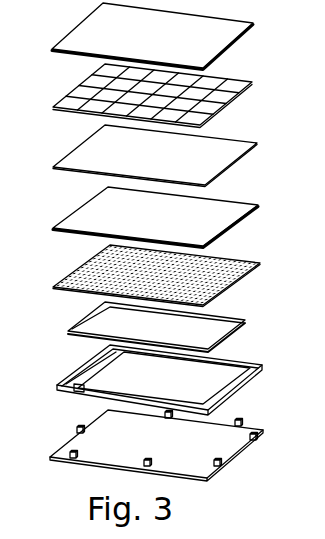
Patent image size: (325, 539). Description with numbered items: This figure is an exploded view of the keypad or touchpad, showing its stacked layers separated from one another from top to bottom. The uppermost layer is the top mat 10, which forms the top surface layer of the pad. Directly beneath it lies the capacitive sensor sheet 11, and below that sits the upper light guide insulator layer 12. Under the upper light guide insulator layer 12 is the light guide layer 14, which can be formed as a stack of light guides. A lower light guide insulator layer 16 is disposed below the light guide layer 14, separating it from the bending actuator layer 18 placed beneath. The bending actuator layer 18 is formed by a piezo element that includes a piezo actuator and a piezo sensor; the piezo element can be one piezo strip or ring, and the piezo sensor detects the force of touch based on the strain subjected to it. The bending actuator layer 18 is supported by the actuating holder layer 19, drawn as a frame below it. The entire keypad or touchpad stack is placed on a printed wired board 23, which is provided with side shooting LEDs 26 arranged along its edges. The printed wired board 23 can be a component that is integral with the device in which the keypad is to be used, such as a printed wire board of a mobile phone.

The top mat 10 is at (210, 42).
The capacitive sensor sheet 11 is at (212, 97).
The upper light guide insulator layer 12 is at (210, 160).
The light guide layer 14 is at (210, 218).
The lower light guide insulator layer 16 is at (212, 279).
The bending actuator layer 18 is at (213, 329).
The actuating holder layer 19 is at (212, 380).
The printed wired board 23 is at (212, 451).
The side shooting LEDs 26 is at (242, 422).